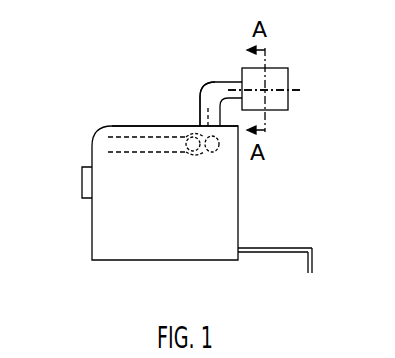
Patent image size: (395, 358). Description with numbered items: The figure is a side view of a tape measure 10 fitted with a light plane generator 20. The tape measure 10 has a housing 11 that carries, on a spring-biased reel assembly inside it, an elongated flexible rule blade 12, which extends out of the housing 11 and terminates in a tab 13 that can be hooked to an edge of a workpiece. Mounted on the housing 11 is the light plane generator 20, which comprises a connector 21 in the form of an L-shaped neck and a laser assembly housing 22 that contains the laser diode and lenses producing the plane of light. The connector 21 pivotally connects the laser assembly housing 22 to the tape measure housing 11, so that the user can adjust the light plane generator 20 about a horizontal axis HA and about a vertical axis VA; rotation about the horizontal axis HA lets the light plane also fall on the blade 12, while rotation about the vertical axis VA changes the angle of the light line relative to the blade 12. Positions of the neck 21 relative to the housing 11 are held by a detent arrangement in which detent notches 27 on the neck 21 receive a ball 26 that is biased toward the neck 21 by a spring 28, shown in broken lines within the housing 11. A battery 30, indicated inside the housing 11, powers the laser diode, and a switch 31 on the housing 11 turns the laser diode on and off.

The tape measure 10 is at (266, 189).
The housing 11 is at (146, 126).
The elongated flexible rule blade 12 is at (290, 254).
The tab 13 is at (315, 259).
The light plane generator 20 is at (225, 70).
The connector 21 is at (206, 88).
The laser assembly housing 22 is at (281, 70).
The ball 26 is at (196, 150).
The detent notches 27 is at (216, 152).
The spring 28 is at (188, 148).
The battery 30 is at (107, 124).
The switch 31 is at (81, 184).
The horizontal axis HA is at (275, 91).
The vertical axis VA is at (196, 111).